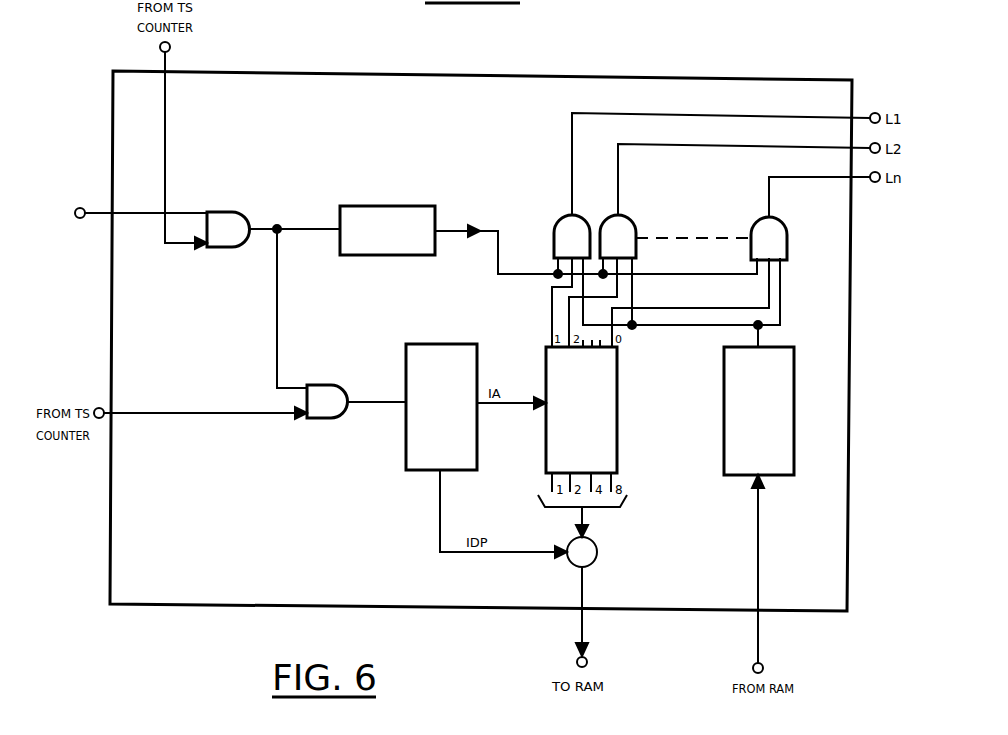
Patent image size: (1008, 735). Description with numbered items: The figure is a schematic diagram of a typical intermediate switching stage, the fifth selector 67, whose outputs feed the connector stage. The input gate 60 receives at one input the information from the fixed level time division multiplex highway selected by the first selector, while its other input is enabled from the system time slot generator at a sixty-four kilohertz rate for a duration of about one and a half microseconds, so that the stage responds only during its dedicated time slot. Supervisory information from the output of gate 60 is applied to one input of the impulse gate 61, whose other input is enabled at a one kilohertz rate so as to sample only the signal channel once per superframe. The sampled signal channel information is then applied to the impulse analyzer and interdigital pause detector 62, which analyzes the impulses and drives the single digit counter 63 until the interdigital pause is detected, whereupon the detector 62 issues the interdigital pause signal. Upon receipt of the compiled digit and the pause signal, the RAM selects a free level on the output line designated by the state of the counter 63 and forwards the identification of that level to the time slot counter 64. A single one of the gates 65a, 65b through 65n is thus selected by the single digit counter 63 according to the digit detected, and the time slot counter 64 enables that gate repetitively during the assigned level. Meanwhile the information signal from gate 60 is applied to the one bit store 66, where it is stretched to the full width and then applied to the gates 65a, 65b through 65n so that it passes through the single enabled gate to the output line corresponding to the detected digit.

The input gate 60 is at (228, 210).
The impulse gate 61 is at (338, 385).
The impulse analyzer and interdigital pause detector 62 is at (406, 465).
The single digit counter 63 is at (617, 412).
The time slot counter 64 is at (728, 478).
The output gate 65a is at (556, 213).
The output gate 65b is at (631, 213).
The output gate 65n is at (756, 216).
The one bit store 66 is at (373, 205).
The fifth selector 67 is at (180, 605).